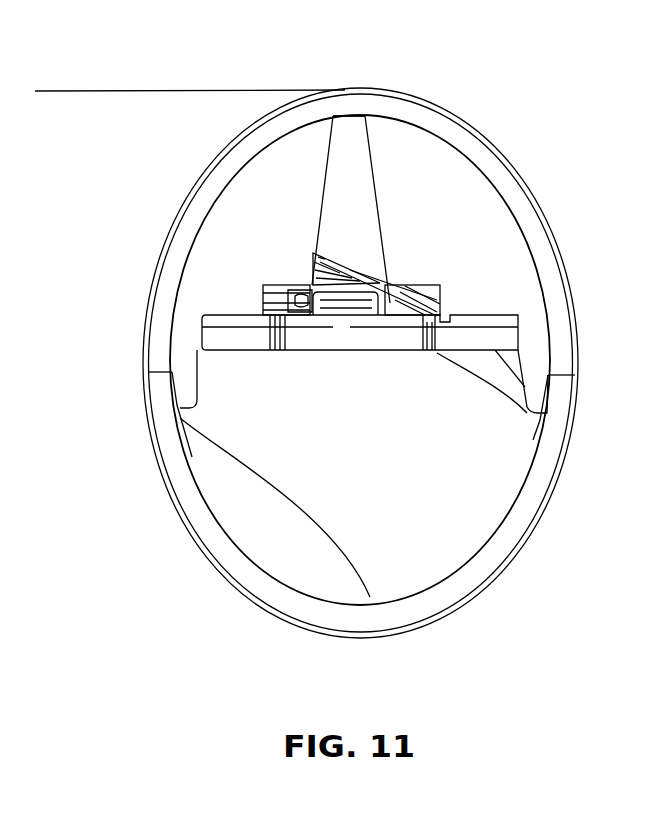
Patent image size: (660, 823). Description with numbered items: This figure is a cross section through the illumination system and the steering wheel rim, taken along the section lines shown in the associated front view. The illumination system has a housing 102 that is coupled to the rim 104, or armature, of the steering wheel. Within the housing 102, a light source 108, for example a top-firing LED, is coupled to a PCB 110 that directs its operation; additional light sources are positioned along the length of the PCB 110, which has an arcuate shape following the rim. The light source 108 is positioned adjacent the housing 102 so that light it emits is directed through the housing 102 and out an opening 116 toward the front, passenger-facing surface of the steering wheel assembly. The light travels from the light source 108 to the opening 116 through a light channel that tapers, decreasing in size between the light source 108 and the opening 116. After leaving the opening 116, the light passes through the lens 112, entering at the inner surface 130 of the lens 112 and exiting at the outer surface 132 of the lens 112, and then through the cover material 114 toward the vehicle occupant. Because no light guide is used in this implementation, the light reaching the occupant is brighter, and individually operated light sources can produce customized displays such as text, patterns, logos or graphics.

The housing 102 is at (255, 228).
The rim 104 is at (455, 472).
The light source 108 is at (365, 305).
The PCB 110 is at (477, 333).
The lens 112 is at (351, 108).
The cover material 114 is at (124, 126).
The opening 116 is at (367, 117).
The inner surface 130 is at (455, 157).
The outer surface 132 is at (435, 118).